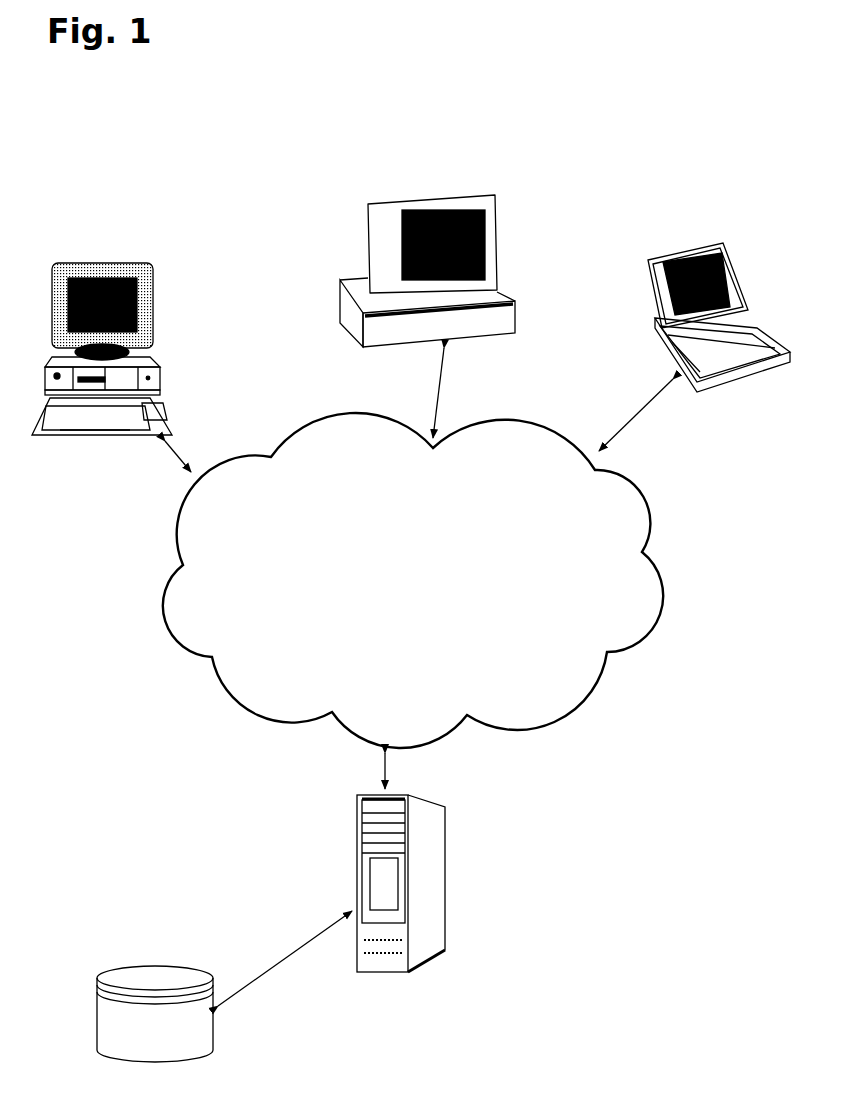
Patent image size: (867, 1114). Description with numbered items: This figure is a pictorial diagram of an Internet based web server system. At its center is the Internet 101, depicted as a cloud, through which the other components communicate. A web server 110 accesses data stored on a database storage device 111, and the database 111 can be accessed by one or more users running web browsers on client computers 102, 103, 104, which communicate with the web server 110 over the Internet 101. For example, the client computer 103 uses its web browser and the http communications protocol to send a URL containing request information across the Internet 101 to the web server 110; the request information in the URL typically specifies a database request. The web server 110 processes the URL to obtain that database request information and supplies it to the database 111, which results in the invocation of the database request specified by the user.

The Internet 101 is at (663, 580).
The client computer 102 is at (763, 328).
The client computer 103 is at (507, 290).
The client computer 104 is at (160, 368).
The web server 110 is at (445, 847).
The database storage device 111 is at (177, 967).